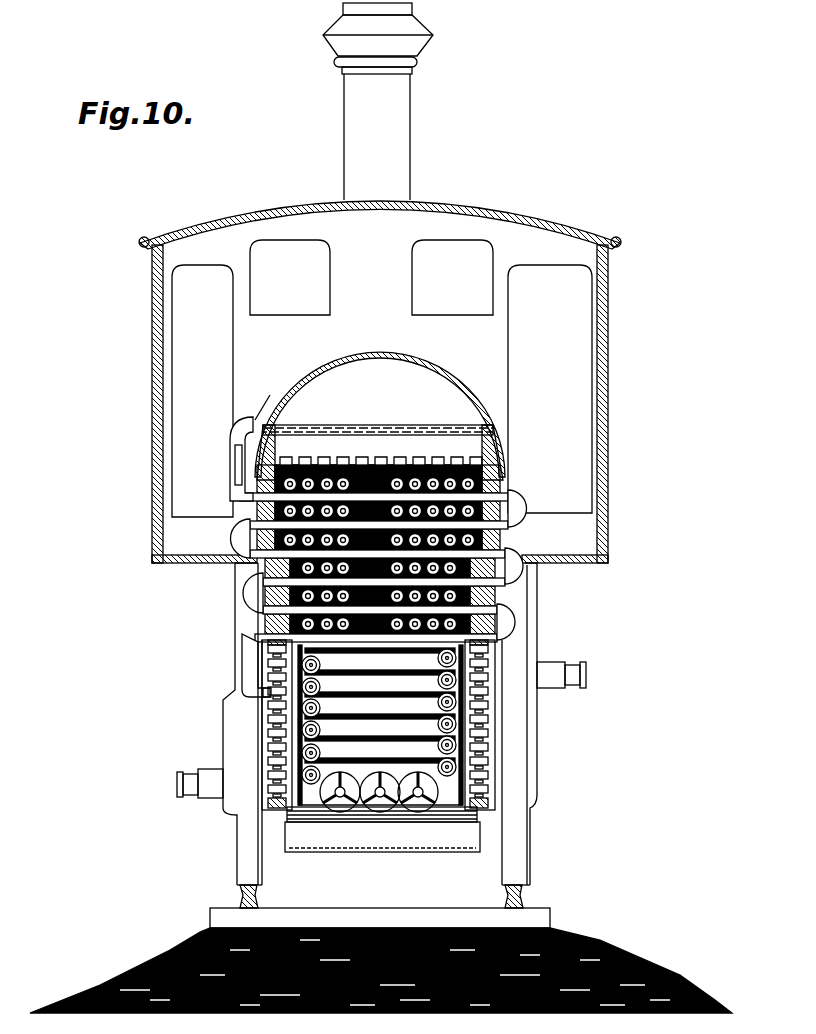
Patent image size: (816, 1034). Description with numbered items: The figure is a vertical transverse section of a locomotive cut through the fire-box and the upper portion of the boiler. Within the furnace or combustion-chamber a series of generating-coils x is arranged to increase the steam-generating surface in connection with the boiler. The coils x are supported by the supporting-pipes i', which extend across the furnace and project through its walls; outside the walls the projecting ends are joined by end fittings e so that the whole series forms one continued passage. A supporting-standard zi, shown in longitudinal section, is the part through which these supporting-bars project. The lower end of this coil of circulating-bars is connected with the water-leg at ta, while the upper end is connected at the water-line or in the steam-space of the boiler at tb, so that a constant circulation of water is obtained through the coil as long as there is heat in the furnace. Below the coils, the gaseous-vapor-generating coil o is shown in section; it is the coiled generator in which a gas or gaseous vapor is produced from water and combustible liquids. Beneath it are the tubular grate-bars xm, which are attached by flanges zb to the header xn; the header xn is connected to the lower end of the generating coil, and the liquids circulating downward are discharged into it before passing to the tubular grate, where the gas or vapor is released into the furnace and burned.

The upper connection to boiler tb is at (250, 448).
The lower connection to water-leg ta is at (254, 676).
The supporting-standard zi is at (500, 474).
The end fittings e is at (379, 565).
The generating-coils x is at (378, 545).
The supporting-pipes i' is at (374, 567).
The gaseous-vapor-generating coil o is at (380, 725).
The tubular grate-bars xm is at (379, 785).
The header xn is at (382, 824).
The flanges zb is at (382, 837).